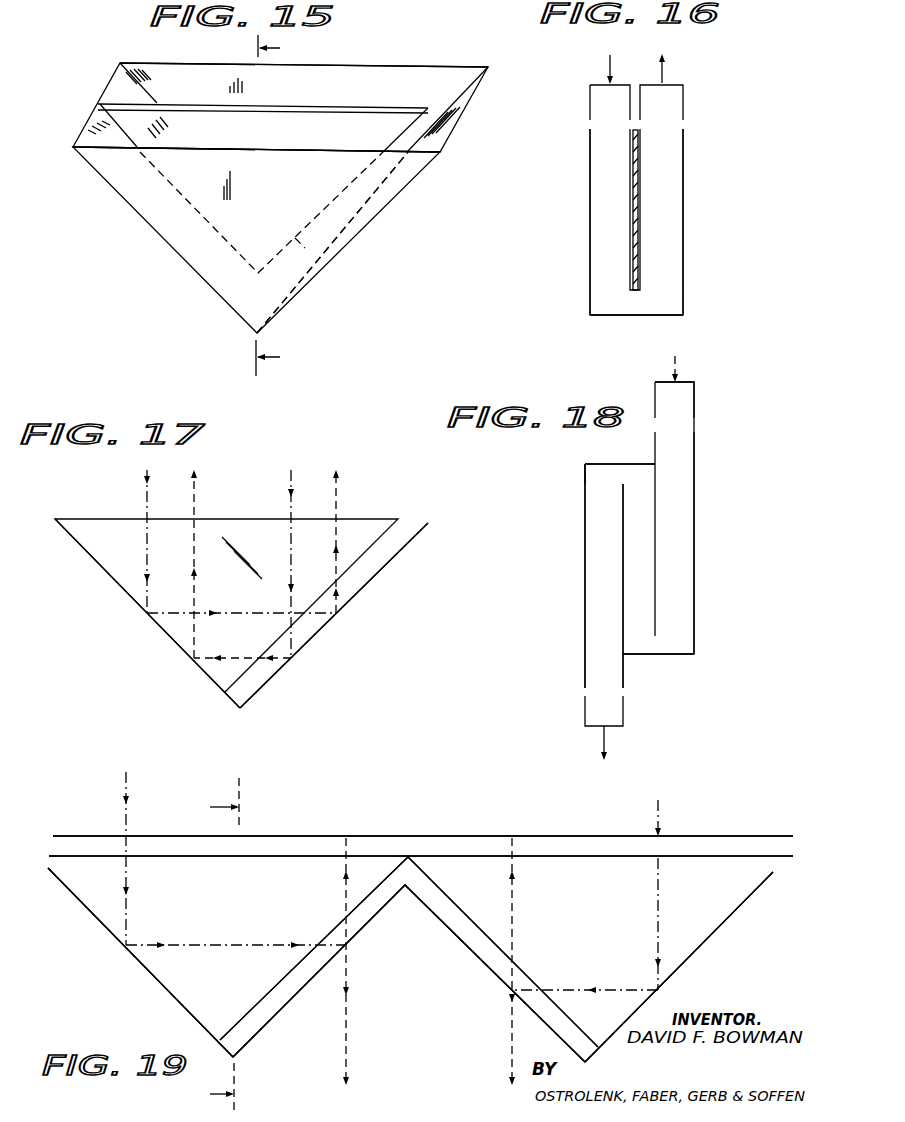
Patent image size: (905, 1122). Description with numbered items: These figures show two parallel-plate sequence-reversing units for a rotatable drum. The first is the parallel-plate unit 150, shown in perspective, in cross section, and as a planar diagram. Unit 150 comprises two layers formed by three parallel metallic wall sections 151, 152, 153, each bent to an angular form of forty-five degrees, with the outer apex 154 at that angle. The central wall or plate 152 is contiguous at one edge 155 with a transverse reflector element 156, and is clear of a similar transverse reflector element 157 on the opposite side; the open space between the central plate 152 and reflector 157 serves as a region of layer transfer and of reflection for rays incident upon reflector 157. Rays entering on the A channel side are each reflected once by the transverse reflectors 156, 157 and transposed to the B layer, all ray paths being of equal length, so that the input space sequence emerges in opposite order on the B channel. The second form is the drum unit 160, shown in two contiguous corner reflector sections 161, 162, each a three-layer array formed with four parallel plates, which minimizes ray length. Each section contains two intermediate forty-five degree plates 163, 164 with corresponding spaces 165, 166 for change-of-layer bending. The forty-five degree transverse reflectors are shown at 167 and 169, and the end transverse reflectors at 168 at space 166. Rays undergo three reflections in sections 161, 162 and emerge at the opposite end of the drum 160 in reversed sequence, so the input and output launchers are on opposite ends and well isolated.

In FIG. 15, the parallel-plate unit 150 is at (150, 256).
In FIG. 16, the parallel-plate unit 150 is at (586, 260).
In FIG. 17, the parallel-plate unit 150 is at (120, 594).
In FIG. 15, the metallic wall section 151 is at (106, 149).
In FIG. 16, the metallic wall section 151 is at (592, 190).
In FIG. 15, the central wall or plate 152 is at (262, 120).
In FIG. 16, the central wall or plate 152 is at (642, 167).
In FIG. 17, the central wall or plate 152 is at (363, 543).
In FIG. 15, the metallic wall section 153 is at (390, 82).
In FIG. 16, the metallic wall section 153 is at (679, 234).
In FIG. 15, the outer apex 154 is at (273, 305).
In FIG. 16, the outer apex 154 is at (637, 318).
In FIG. 15, the edge of central plate 155 is at (108, 118).
In FIG. 15, the transverse reflector element 156 is at (120, 83).
In FIG. 17, the transverse reflector element 156 is at (172, 634).
In FIG. 15, the transverse reflector element 157 is at (443, 128).
In FIG. 17, the transverse reflector element 157 is at (365, 592).
In FIG. 18, the drum unit 160 is at (576, 621).
In FIG. 19, the drum unit 160 is at (436, 1034).
In FIG. 19, the corner reflector section 161 is at (146, 977).
In FIG. 19, the corner reflector section 162 is at (670, 982).
In FIG. 18, the intermediate forty-five degree plate 163 is at (657, 540).
In FIG. 19, the intermediate forty-five degree plate 163 is at (280, 980).
In FIG. 18, the intermediate forty-five degree plate 164 is at (619, 549).
In FIG. 18, the space for change of layer bending 165 is at (655, 644).
In FIG. 19, the space for change of layer bending 165 is at (290, 998).
In FIG. 18, the space for change of layer bending 166 is at (646, 450).
In FIG. 19, the space for change of layer bending 166 is at (268, 845).
In FIG. 19, the forty-five degree transverse reflector 167 is at (373, 922).
In FIG. 18, the end transverse reflector 168 is at (599, 463).
In FIG. 19, the end transverse reflector 168 is at (533, 845).
In FIG. 19, the forty-five degree transverse reflector 169 is at (88, 895).